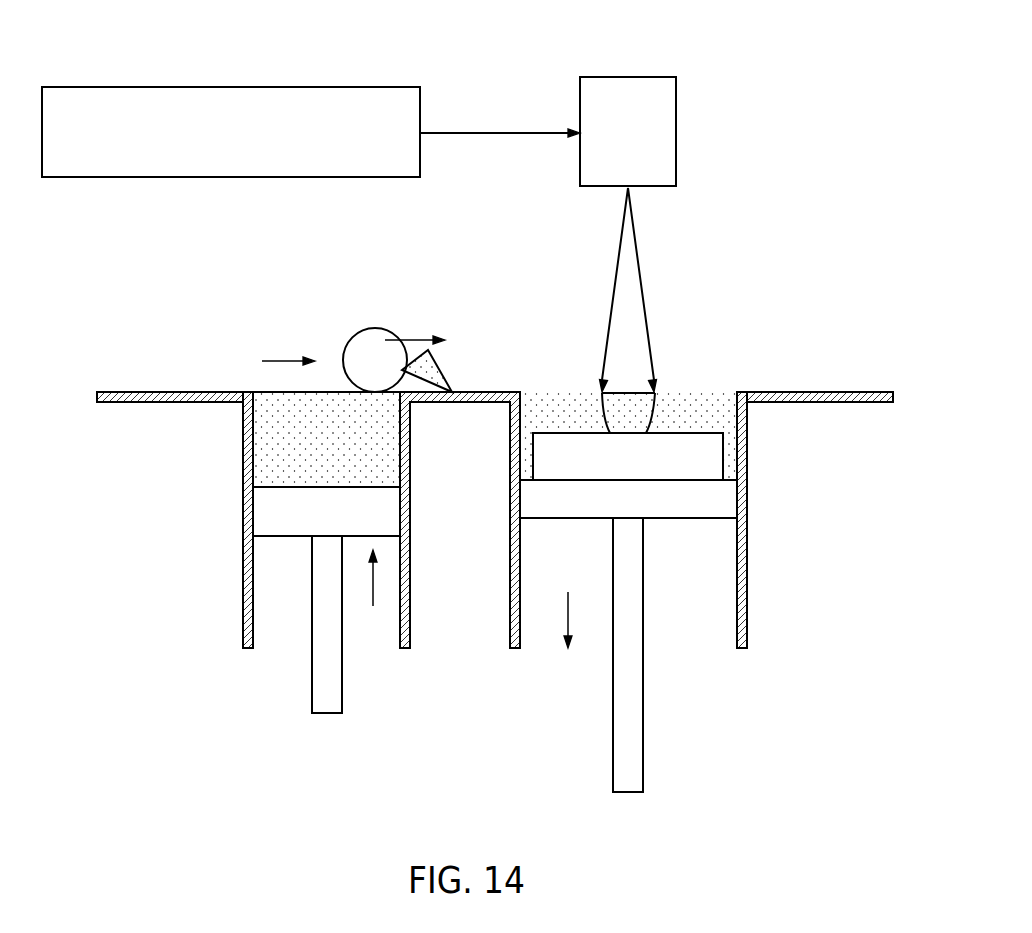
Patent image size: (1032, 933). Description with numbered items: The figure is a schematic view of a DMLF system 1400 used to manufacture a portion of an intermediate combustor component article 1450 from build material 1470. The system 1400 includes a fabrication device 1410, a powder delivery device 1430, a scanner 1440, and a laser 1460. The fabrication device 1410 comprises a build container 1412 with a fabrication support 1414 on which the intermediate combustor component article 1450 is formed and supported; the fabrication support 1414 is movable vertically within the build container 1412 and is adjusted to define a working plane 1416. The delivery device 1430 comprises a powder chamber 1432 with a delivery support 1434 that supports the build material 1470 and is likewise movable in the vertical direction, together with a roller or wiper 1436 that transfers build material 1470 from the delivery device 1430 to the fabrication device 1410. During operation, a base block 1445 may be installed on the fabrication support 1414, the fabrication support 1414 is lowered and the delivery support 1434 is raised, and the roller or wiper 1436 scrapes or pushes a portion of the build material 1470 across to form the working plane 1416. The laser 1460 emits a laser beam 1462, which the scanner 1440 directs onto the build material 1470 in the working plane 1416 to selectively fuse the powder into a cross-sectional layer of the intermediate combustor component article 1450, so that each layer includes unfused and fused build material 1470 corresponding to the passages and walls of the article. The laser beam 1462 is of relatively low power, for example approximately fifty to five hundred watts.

The DMLF system 1400 is at (495, 207).
The fabrication device 1410 is at (645, 520).
The build container 1412 is at (743, 419).
The fabrication support 1414 is at (692, 520).
The working plane 1416 is at (717, 397).
The powder delivery device 1430 is at (220, 520).
The powder chamber 1432 is at (248, 453).
The delivery support 1434 is at (265, 508).
The roller or wiper 1436 is at (377, 328).
The scanner 1440 is at (630, 77).
The base block 1445 is at (573, 468).
The intermediate combustor component article 1450 is at (583, 371).
The laser 1460 is at (238, 87).
The laser beam 1462 is at (503, 130).
The build material 1470 is at (265, 430).